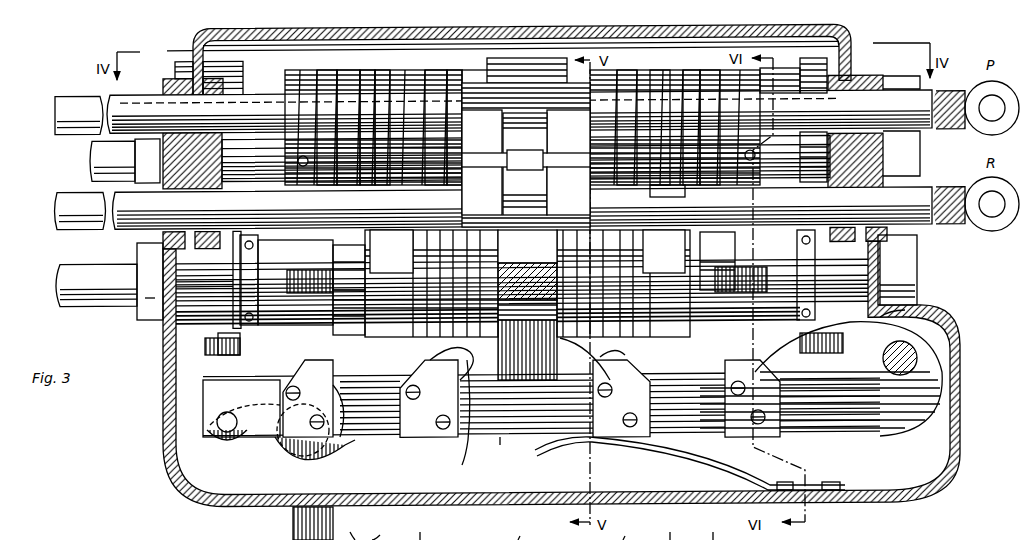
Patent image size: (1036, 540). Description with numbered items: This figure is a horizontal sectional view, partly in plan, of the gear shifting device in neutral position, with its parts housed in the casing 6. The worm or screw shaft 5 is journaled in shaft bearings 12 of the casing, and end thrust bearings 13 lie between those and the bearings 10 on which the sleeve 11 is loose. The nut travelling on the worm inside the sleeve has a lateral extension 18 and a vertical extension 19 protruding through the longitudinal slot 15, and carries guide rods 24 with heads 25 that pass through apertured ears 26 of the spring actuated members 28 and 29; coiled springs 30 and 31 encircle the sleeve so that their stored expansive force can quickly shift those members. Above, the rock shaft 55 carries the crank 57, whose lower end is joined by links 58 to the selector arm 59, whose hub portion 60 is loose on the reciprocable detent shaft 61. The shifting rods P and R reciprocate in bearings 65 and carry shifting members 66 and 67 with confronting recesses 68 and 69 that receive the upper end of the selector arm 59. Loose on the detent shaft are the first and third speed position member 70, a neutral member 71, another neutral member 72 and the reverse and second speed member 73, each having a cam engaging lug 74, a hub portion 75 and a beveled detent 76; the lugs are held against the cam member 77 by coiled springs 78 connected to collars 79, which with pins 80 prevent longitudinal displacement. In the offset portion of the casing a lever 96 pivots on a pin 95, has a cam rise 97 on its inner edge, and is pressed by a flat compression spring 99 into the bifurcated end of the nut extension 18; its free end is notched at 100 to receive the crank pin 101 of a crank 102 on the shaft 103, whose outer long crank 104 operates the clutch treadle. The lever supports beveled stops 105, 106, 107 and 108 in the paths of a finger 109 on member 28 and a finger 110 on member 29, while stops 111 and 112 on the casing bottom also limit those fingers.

The worm or screw shaft 5 is at (95, 270).
The casing 6 is at (186, 494).
The bearings 10 is at (252, 325).
The sleeve 11 is at (295, 282).
The shaft bearings 12 is at (140, 255).
The end thrust bearings 13 is at (254, 246).
The longitudinal slot 15 is at (338, 321).
The lateral extension 18 is at (557, 355).
The vertical extension 19 is at (512, 266).
The guide rods 24 is at (405, 370).
The heads 25 is at (745, 294).
The apertured ears 26 is at (350, 258).
The spring actuated member 28 is at (431, 283).
The spring actuated member 29 is at (623, 283).
The coiled spring 30 is at (462, 360).
The coiled spring 31 is at (623, 350).
The rock shaft 55 is at (635, 530).
The crank 57 is at (540, 62).
The links 58 is at (518, 538).
The selector arm 59 is at (525, 160).
The hub portion 60 is at (525, 164).
The detent shaft 61 is at (92, 154).
The bearings 65 is at (884, 88).
The shifting member 66 is at (526, 142).
The shifting member 67 is at (482, 191).
The recess 68 is at (548, 136).
The recess 69 is at (548, 183).
The first and third speed position member 70 is at (316, 85).
The neutral member 71 is at (386, 90).
The neutral member 72 is at (690, 119).
The reverse and second speed gear position member 73 is at (738, 190).
The cam engaging lug 74 is at (535, 529).
The hub portion 75 is at (668, 190).
The beveled detent 76 is at (385, 529).
The cam member 77 is at (503, 531).
The coiled springs 78 is at (495, 119).
The collar 79 is at (540, 119).
The pins 80 is at (298, 78).
The pin 95 is at (935, 345).
The lever 96 is at (600, 380).
The cam rise 97 is at (459, 417).
The flat compression spring 99 is at (672, 452).
The notch 100 is at (205, 425).
The crank pin 101 is at (225, 432).
The crank 102 is at (283, 450).
The shaft 103 is at (345, 447).
The long crank 104 is at (293, 521).
The stop 105 is at (308, 398).
The stop 106 is at (429, 398).
The stop 107 is at (621, 398).
The stop 108 is at (752, 398).
The finger 109 is at (366, 350).
The finger 110 is at (690, 352).
The stop 111 is at (211, 346).
The stop 112 is at (920, 310).